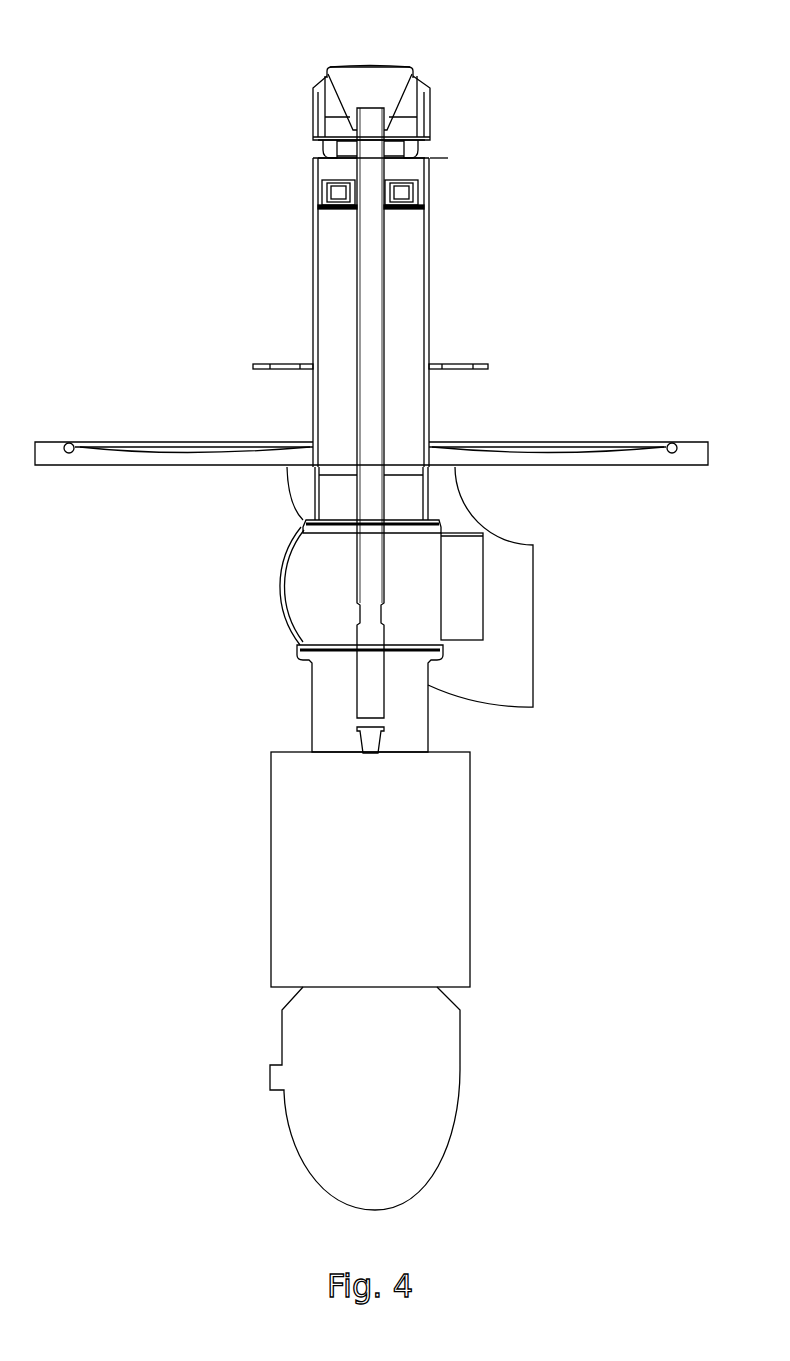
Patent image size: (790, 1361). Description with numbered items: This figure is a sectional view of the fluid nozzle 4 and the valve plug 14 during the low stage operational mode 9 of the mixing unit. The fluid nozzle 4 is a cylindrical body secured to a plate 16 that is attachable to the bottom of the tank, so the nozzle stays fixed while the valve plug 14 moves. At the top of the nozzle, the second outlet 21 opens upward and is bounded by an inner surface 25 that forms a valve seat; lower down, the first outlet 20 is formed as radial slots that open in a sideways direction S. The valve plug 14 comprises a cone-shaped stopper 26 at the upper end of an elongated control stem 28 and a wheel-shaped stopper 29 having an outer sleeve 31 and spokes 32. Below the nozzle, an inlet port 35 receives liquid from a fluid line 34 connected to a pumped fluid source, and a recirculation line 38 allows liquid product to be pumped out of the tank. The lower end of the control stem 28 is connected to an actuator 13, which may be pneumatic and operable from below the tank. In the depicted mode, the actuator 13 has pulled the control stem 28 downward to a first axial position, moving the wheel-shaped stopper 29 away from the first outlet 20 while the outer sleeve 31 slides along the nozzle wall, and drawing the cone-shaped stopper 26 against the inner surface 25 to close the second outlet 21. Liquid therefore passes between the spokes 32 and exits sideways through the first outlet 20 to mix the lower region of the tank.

The low stage operational mode 9 is at (461, 84).
The valve plug 14 is at (361, 65).
The second outlet 21 is at (325, 73).
The inner surface 25 is at (318, 80).
The cone-shaped stopper 26 is at (355, 95).
The first outlet 20 is at (323, 156).
The outer sleeve 31 is at (318, 183).
The wheel-shaped stopper 29 is at (318, 193).
The spokes 32 is at (318, 210).
The fluid nozzle 4 is at (312, 252).
The control stem 28 is at (370, 290).
The plate 16 is at (243, 467).
The inlet port 35 is at (280, 577).
The fluid line 34 is at (483, 582).
The recirculation line 38 is at (503, 532).
The actuator 13 is at (337, 1013).
The sideways direction S is at (465, 158).